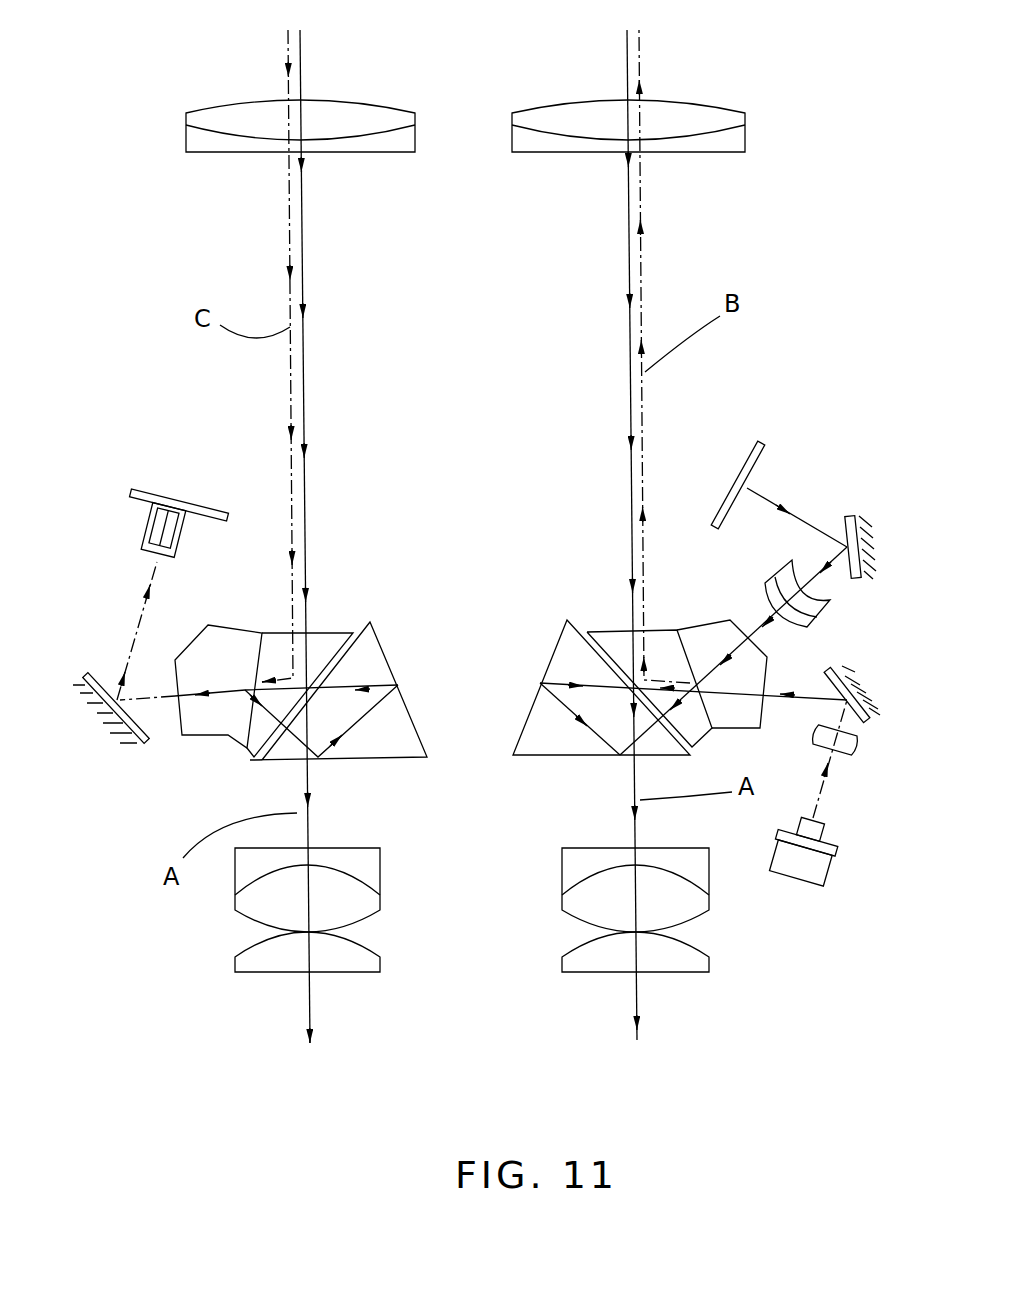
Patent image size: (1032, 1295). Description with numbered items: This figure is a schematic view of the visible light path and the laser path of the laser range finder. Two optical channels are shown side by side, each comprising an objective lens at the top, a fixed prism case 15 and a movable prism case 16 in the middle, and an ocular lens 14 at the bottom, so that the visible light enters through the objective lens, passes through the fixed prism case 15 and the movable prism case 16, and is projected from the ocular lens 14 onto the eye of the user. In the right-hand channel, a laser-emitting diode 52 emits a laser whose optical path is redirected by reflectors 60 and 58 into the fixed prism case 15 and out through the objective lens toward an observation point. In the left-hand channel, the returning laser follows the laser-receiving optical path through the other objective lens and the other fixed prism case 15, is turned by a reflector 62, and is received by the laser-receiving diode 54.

The ocular lens 14 is at (565, 982).
The fixed prism case 15 is at (607, 637).
The movable prism case 16 is at (532, 743).
The laser-emitting diode 52 is at (820, 867).
The laser-receiving diode 54 is at (137, 525).
The reflector 58 is at (852, 517).
The reflector 60 is at (860, 682).
The reflector 62 is at (103, 700).